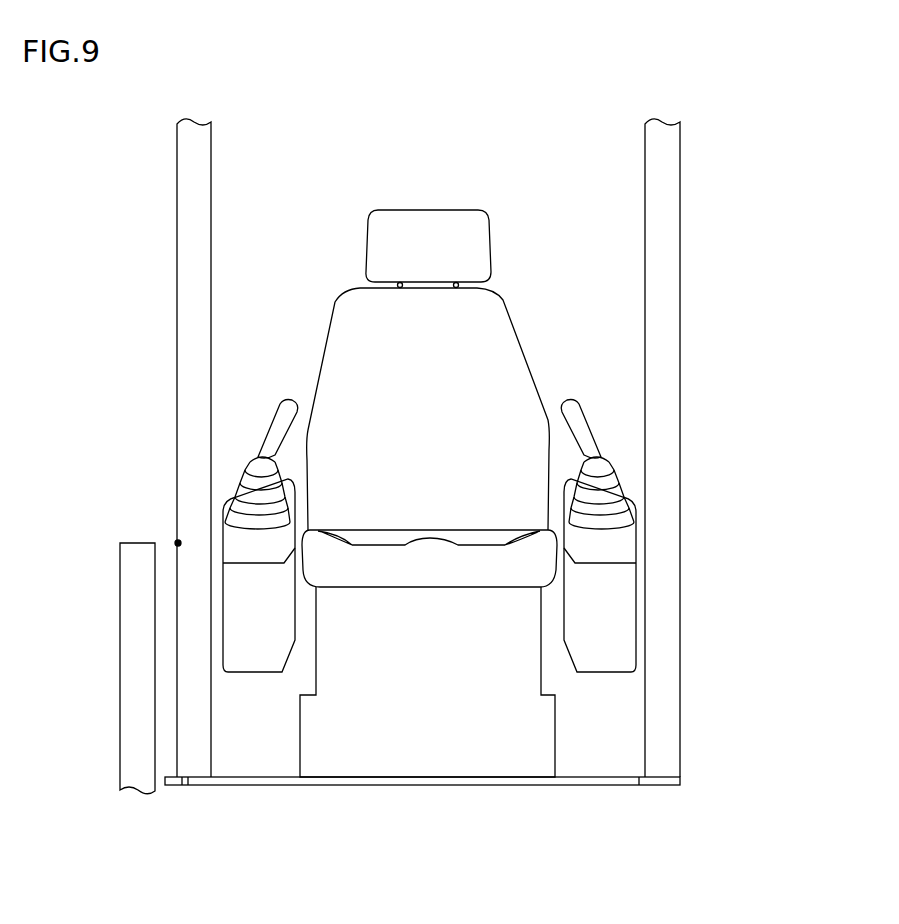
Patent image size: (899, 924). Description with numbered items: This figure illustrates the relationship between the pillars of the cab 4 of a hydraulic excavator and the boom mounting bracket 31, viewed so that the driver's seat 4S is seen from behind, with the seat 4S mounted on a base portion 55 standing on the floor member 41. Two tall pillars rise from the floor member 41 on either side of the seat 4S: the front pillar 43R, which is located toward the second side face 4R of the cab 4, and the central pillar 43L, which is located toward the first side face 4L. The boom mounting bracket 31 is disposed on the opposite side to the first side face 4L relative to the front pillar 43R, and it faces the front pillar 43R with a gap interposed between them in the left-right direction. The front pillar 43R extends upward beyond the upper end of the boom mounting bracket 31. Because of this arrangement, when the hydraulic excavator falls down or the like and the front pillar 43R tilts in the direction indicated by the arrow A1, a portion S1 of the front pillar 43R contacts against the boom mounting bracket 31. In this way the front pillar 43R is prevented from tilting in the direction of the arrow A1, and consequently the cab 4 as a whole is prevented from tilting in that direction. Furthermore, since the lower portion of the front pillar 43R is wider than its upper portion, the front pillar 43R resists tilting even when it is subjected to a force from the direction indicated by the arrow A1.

The cab 4 is at (764, 144).
The arrow A1 is at (170, 199).
The driver's seat 4S is at (428, 222).
The second side face 4R is at (178, 343).
The first side face 4L is at (681, 365).
The front pillar 43R is at (186, 270).
The central pillar 43L is at (672, 270).
The boom mounting bracket 31 is at (137, 557).
The floor member 41 is at (222, 786).
The base portion 55 is at (533, 712).
The portion S1 is at (176, 541).